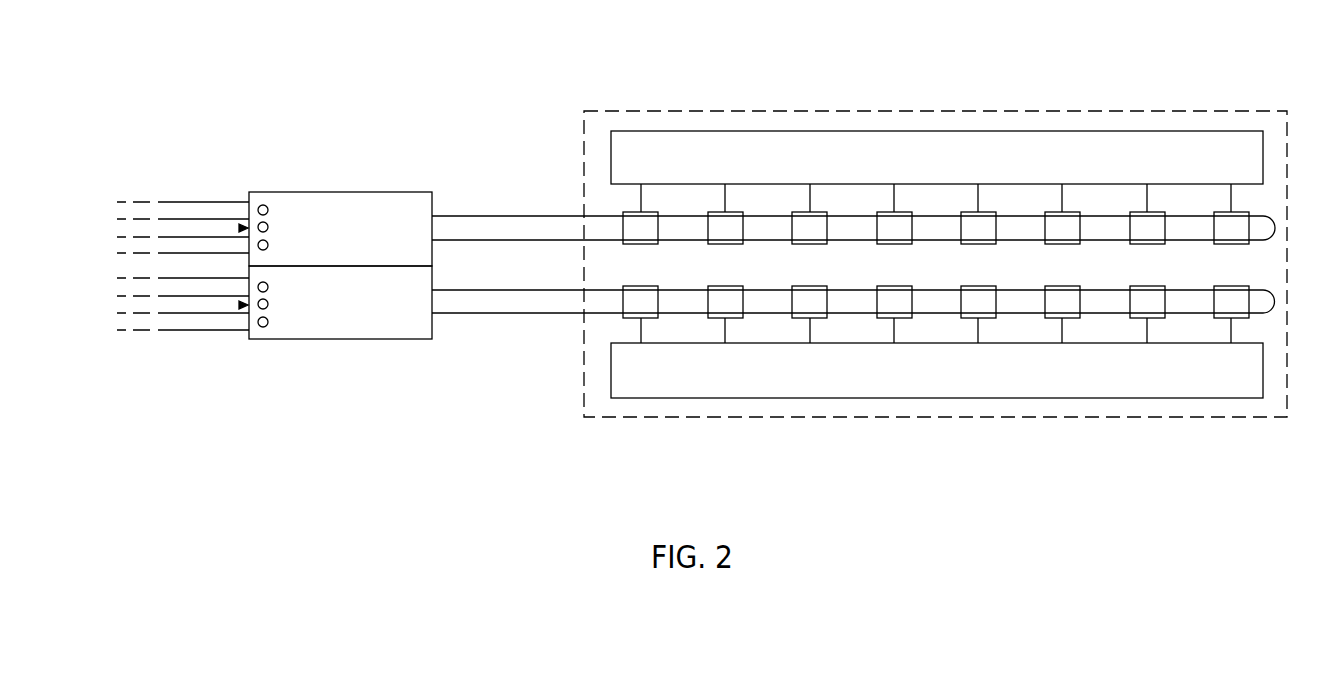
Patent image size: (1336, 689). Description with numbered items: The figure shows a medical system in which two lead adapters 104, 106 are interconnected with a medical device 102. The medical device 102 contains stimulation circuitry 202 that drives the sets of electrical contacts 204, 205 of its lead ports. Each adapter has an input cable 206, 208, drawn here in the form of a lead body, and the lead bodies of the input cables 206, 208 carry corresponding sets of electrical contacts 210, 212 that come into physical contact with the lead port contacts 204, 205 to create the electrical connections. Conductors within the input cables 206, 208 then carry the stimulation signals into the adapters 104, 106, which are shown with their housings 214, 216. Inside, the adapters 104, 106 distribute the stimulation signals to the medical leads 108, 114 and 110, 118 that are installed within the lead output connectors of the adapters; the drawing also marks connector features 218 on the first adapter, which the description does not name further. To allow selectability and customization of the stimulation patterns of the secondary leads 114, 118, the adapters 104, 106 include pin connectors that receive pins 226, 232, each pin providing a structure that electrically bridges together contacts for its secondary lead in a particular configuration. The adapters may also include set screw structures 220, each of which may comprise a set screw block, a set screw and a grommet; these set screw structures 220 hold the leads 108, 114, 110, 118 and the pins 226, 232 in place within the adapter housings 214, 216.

The medical device 102 is at (797, 93).
The adapter 104 is at (365, 191).
The adapter 106 is at (413, 341).
The medical lead 108 is at (170, 212).
The medical lead 110 is at (175, 285).
The secondary lead 114 is at (187, 248).
The secondary lead 118 is at (197, 323).
The stimulation circuitry 202 is at (912, 131).
The set of electrical contacts 204 is at (653, 212).
The set of electrical contacts 205 is at (650, 318).
The input cable 206 is at (462, 240).
The input cable 208 is at (455, 313).
The set of electrical contacts 210 is at (635, 215).
The set of electrical contacts 212 is at (635, 317).
The housing 214 is at (303, 212).
The housing 216 is at (358, 331).
The first connector contacts 218 is at (263, 205).
The set screw structure 220 is at (266, 326).
The pin 226 is at (241, 228).
The pin 232 is at (241, 306).